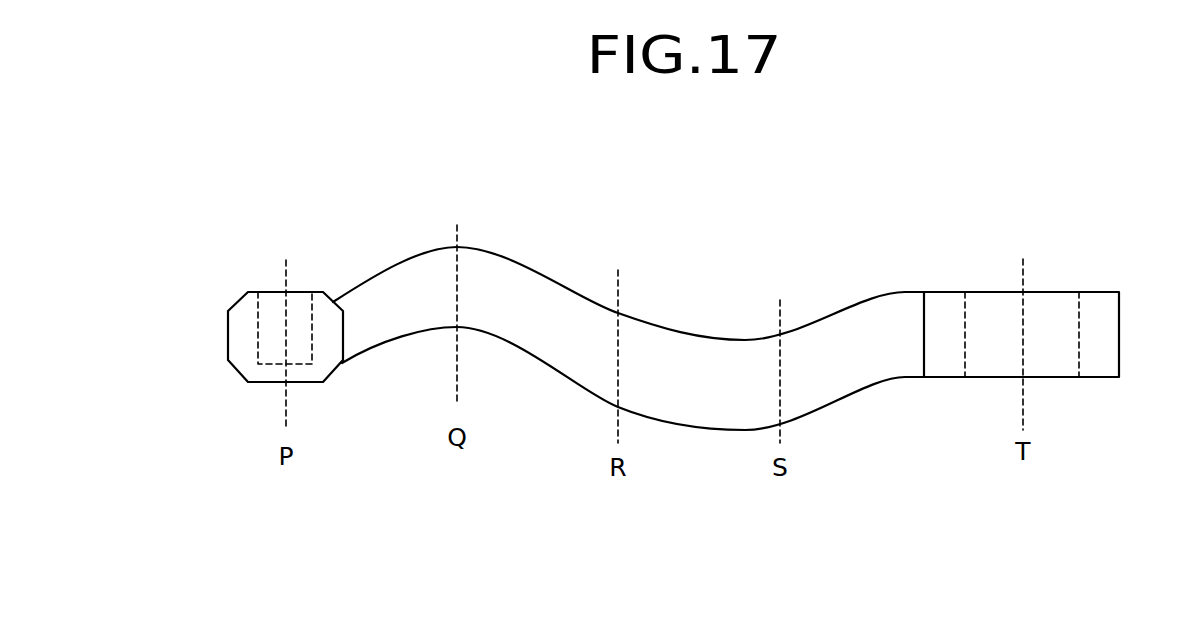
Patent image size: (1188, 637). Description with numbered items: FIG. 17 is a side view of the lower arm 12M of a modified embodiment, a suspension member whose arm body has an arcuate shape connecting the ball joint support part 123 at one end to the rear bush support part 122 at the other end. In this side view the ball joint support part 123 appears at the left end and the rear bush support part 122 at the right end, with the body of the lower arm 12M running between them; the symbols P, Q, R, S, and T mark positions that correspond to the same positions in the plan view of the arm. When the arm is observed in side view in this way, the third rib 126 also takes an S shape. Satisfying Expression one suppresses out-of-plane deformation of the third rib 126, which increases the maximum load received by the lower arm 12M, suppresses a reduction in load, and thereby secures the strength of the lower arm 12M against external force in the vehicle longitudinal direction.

The lower arm 12M is at (925, 228).
The rear bush support part 122 is at (1120, 140).
The ball joint support part 123 is at (242, 358).
The third rib 126 is at (853, 388).